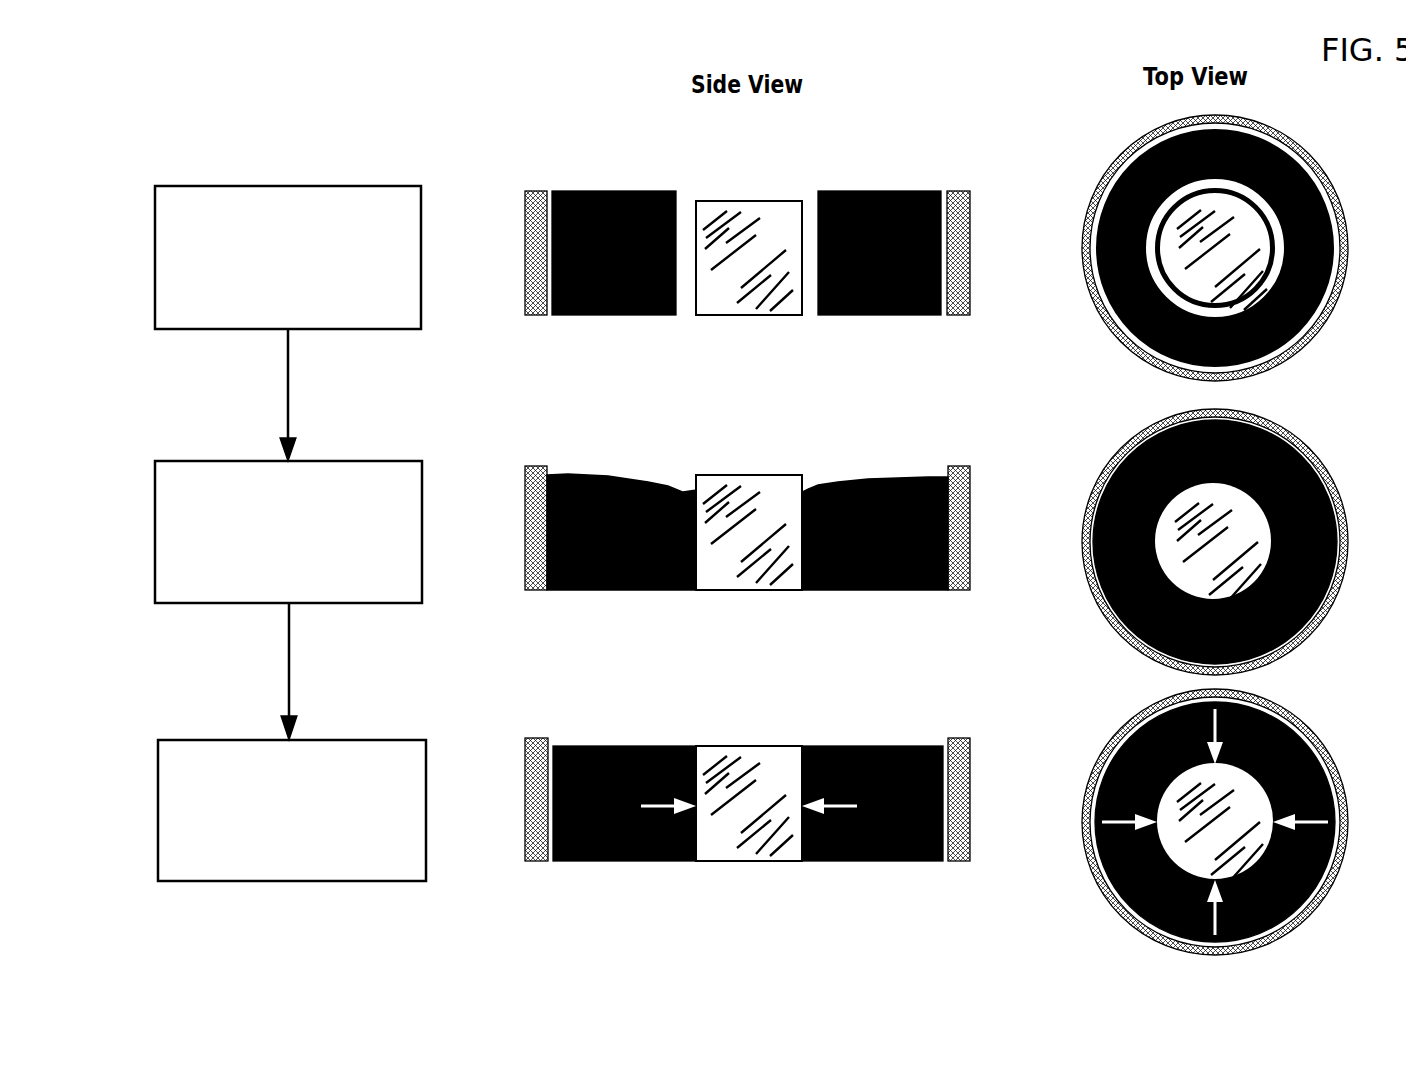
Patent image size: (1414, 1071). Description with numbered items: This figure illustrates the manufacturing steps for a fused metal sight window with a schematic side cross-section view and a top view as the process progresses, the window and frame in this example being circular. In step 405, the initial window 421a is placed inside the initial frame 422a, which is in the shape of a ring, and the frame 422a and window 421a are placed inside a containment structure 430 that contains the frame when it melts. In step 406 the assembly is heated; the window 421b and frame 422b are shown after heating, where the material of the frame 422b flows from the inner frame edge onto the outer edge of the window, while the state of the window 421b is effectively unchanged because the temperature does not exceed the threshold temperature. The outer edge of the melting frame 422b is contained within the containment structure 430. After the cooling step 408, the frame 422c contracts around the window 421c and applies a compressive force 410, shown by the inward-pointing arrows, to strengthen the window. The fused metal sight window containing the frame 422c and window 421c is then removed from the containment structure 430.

The step 405 is at (146, 250).
The step 406 is at (145, 512).
The cooling step 408 is at (148, 798).
The containment structure 430 is at (523, 183).
The initial window 421a is at (753, 193).
The initial frame 422a is at (885, 183).
The window 421b is at (745, 467).
The frame 422b is at (888, 470).
The window 421c is at (745, 738).
The frame 422c is at (871, 738).
The compressive force 410 is at (665, 797).